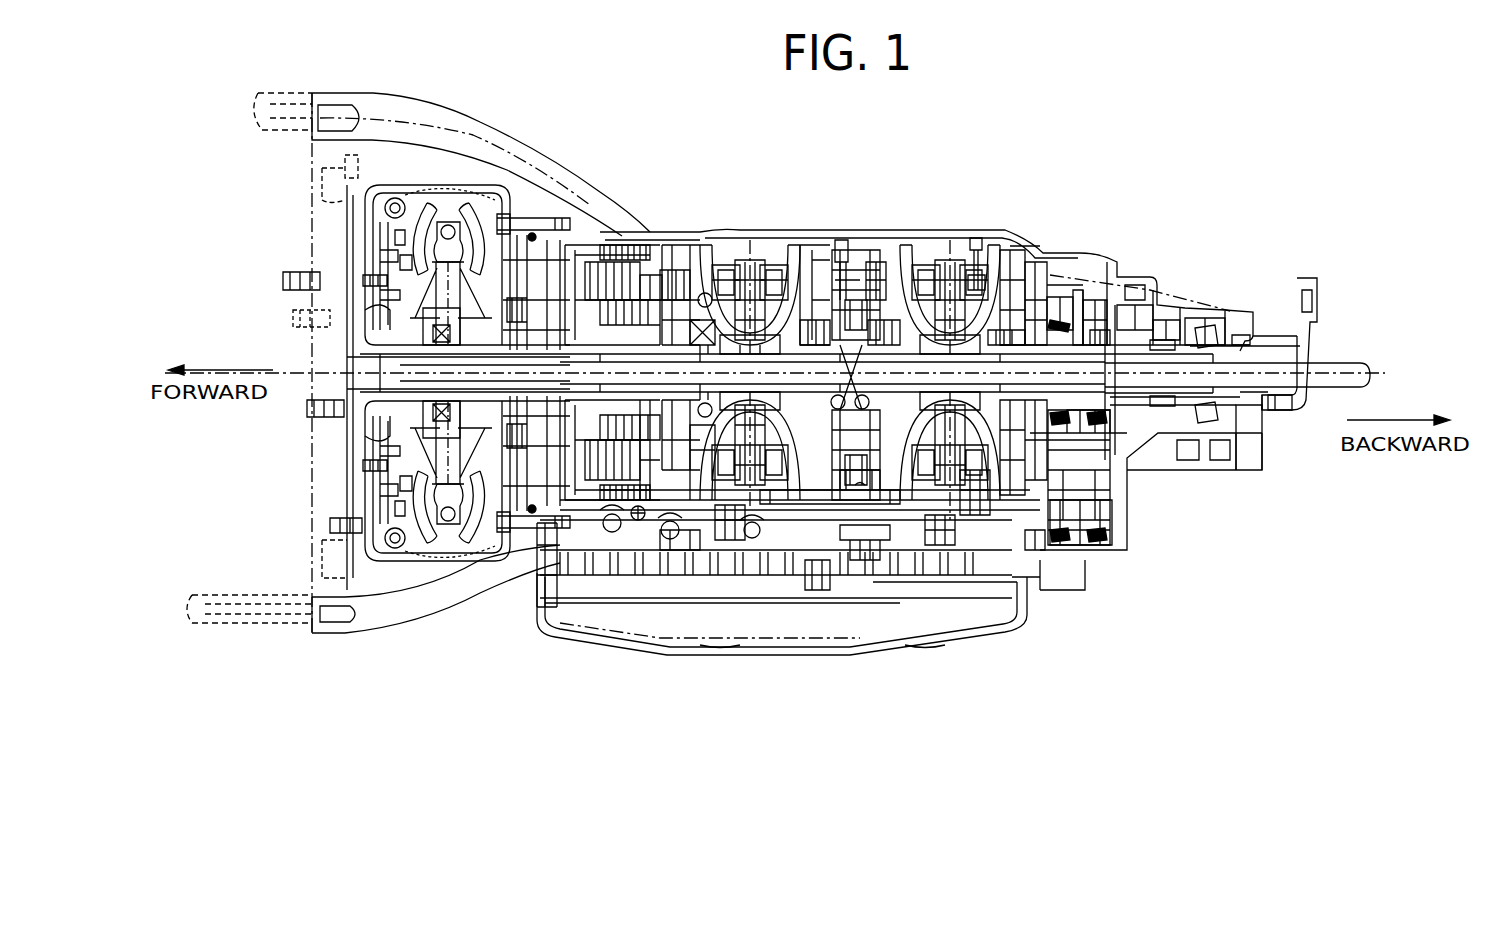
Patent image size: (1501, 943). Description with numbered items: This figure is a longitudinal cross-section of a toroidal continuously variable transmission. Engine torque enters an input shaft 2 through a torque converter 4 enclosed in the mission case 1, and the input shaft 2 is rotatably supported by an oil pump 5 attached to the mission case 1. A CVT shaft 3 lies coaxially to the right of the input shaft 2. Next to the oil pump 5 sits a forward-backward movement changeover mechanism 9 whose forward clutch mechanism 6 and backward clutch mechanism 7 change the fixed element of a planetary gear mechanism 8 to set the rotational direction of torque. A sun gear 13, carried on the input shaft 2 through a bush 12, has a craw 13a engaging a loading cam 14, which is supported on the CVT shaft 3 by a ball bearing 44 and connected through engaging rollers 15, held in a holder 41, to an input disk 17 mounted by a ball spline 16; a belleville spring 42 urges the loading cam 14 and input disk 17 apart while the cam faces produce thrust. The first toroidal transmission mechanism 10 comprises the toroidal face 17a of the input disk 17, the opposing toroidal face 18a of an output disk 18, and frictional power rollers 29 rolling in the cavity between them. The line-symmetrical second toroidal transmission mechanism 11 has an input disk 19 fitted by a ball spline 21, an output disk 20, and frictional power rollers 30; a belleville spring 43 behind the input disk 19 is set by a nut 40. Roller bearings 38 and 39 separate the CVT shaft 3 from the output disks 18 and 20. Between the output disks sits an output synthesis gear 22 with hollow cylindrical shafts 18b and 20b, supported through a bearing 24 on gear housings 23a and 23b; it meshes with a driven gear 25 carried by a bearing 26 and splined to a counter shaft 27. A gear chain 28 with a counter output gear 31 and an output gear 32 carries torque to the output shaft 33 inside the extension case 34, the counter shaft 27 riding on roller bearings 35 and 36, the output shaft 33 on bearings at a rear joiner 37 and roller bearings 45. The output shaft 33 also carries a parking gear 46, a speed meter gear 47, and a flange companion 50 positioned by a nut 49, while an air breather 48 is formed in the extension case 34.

The mission case 1 is at (898, 287).
The input shaft 2 is at (380, 378).
The CVT shaft 3 is at (1080, 413).
The torque converter 4 is at (452, 186).
The oil pump 5 is at (505, 285).
The forward clutch mechanism 6 is at (586, 262).
The backward clutch mechanism 7 is at (617, 248).
The planetary gear mechanism 8 is at (600, 492).
The forward-backward movement changeover mechanism 9 is at (553, 614).
The first toroidal transmission mechanism 10 is at (773, 300).
The second toroidal transmission mechanism 11 is at (984, 274).
The bush 12 is at (670, 384).
The sun gear 13 is at (625, 302).
The craw 13a is at (648, 290).
The loading cam 14 is at (663, 288).
The engaging rollers 15 is at (690, 292).
The ball spline 16 is at (702, 323).
The input disk 17 is at (722, 300).
The toroidal face 17a is at (735, 300).
The output disk 18 is at (812, 302).
The toroidal face 18a is at (787, 287).
The hollow cylindrical shaft 18b is at (802, 383).
The input disk 19 is at (1008, 282).
The output disk 20 is at (925, 280).
The hollow cylindrical shaft 20b is at (897, 383).
The ball spline 21 is at (1006, 396).
The output synthesis gear 22 is at (850, 302).
The gear housing 23a is at (842, 287).
The gear housing 23b is at (862, 297).
The bearing 24 is at (834, 405).
The driven gear 25 is at (868, 452).
The bearing 26 is at (862, 542).
The counter shaft 27 is at (940, 517).
The gear chain 28 is at (1070, 562).
The frictional power rollers 29 is at (730, 513).
The frictional power rollers 30 is at (967, 478).
The counter output gear 31 is at (1097, 547).
The output gear 32 is at (1062, 332).
The output shaft 33 is at (1325, 366).
The extension case 34 is at (1205, 316).
The roller bearing 35 is at (1032, 552).
The roller bearing 36 is at (1083, 546).
The rear joiner 37 is at (1030, 300).
The roller bearing 38 is at (1057, 234).
The roller bearing 39 is at (1160, 341).
The nut 40 is at (1075, 347).
The holder 41 is at (677, 563).
The belleville spring 42 is at (700, 402).
The belleville spring 43 is at (1012, 330).
The ball bearing 44 is at (658, 563).
The roller bearings 45 is at (1212, 340).
The parking gear 46 is at (1092, 332).
The speed meter gear 47 is at (1166, 342).
The air breather 48 is at (1135, 292).
The nut 49 is at (1285, 394).
The flange companion 50 is at (1280, 420).